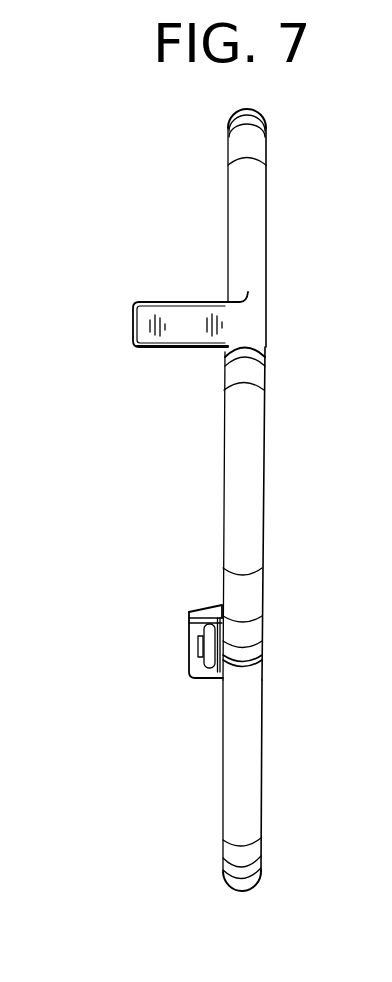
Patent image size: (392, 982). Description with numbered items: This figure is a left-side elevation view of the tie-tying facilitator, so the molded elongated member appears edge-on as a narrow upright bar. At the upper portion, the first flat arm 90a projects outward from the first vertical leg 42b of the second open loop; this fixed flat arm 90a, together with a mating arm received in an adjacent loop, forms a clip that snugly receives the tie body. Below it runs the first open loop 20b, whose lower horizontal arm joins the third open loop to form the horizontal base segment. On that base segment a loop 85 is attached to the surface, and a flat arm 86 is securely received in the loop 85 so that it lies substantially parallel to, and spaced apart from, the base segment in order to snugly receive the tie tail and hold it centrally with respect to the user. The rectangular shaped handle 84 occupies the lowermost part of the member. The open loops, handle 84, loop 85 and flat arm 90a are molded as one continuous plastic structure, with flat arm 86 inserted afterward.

The first vertical leg 42b is at (249, 221).
The first flat arm 90a is at (160, 338).
The first open loop 20b is at (252, 512).
The loop 85 is at (193, 612).
The flat arm 86 is at (206, 660).
The handle 84 is at (243, 798).